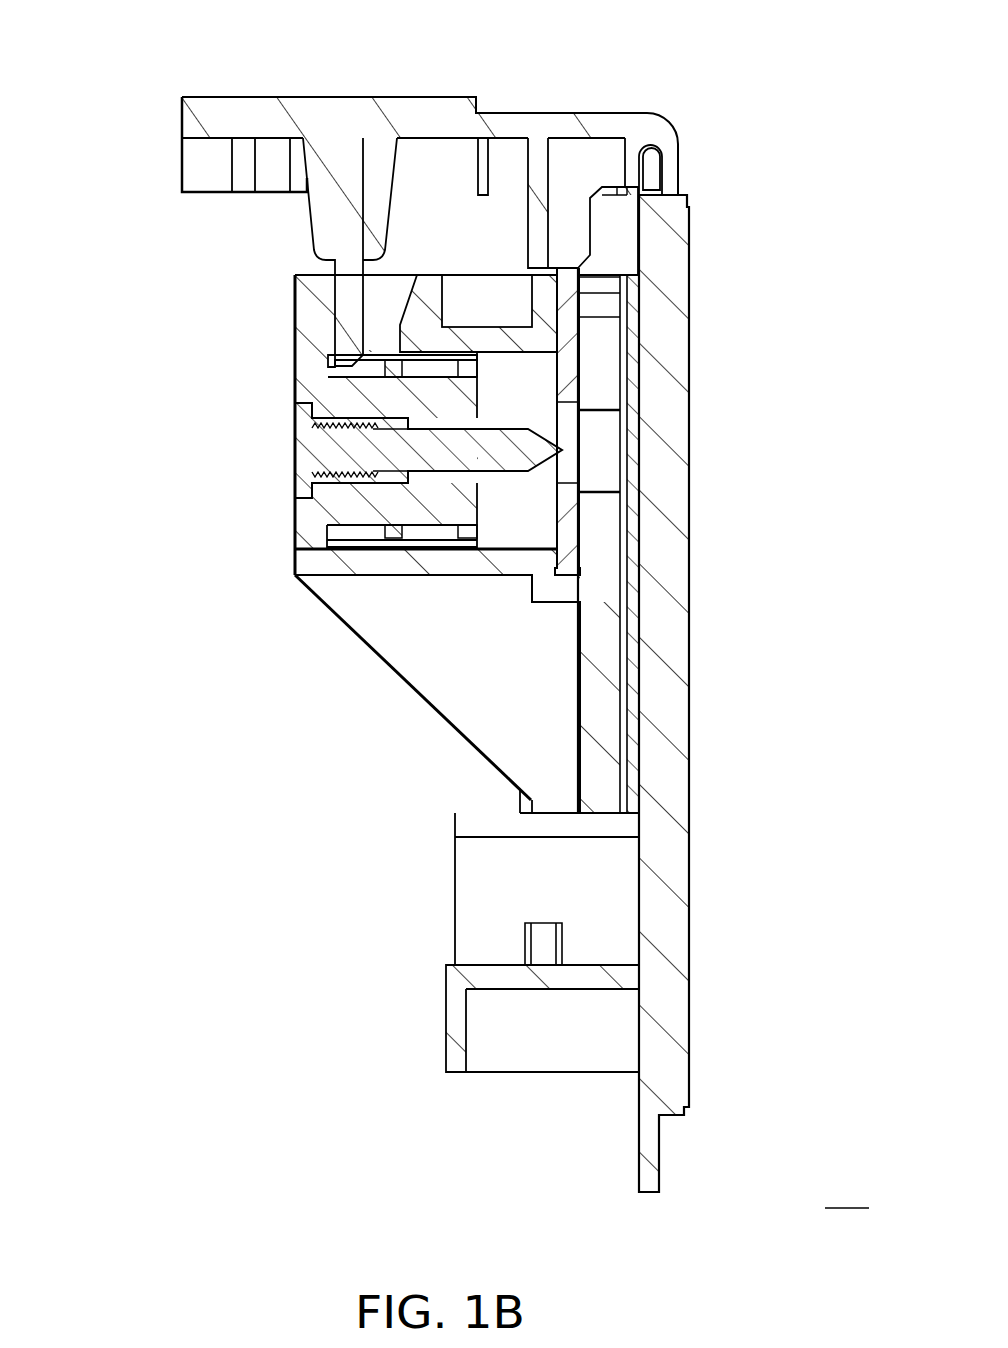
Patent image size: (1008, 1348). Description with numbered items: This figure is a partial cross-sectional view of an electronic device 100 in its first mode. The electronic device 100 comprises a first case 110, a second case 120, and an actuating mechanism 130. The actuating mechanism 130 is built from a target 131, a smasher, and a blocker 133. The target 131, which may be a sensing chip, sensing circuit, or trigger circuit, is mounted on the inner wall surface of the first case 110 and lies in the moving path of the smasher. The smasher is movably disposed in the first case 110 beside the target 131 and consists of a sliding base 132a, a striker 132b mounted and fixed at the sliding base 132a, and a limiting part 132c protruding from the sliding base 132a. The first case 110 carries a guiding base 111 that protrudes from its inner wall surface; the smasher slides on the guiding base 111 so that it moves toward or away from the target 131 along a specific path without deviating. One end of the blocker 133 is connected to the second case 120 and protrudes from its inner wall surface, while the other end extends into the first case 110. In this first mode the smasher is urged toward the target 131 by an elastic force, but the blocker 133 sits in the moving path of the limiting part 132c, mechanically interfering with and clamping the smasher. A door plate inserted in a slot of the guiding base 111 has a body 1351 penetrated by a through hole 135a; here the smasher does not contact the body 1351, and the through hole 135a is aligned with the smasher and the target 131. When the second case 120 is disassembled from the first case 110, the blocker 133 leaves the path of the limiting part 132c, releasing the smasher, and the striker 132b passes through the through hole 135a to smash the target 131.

The electronic device 100 is at (462, 609).
The first case 110 is at (680, 636).
The guiding base 111 is at (463, 562).
The second case 120 is at (398, 110).
The actuating mechanism 130 is at (304, 462).
The target 131 is at (622, 477).
The sliding base 132a is at (333, 507).
The striker 132b is at (425, 458).
The limiting part 132c is at (305, 305).
The blocker 133 is at (350, 312).
The body 1351 is at (716, 381).
The through hole 135a is at (570, 435).